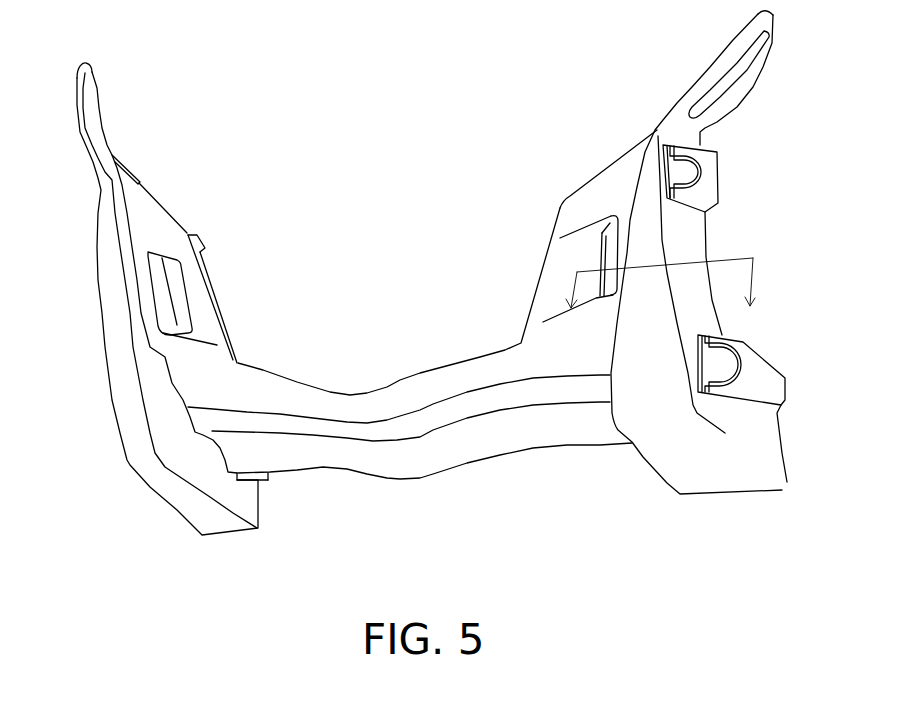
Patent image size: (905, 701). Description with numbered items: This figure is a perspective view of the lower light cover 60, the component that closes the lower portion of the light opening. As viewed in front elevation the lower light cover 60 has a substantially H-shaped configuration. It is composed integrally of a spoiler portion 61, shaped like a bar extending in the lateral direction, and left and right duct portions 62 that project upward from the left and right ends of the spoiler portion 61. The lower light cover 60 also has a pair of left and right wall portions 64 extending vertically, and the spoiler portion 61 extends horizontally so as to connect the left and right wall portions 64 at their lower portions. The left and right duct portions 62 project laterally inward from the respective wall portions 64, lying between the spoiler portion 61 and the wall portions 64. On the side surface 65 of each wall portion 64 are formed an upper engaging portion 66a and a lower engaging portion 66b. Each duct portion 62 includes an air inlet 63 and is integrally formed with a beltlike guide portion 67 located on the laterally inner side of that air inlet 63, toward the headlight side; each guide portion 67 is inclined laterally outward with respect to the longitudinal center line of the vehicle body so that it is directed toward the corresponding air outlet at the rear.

The lower light cover 60 is at (128, 465).
The spoiler portion 61 is at (393, 437).
The duct portion 62 is at (140, 272).
The air inlet 63 is at (180, 303).
The wall portion 64 is at (112, 390).
The side surface 65 is at (192, 453).
The upper engaging portion 66a is at (717, 153).
The lower engaging portion 66b is at (760, 367).
The guide portion 67 is at (207, 317).